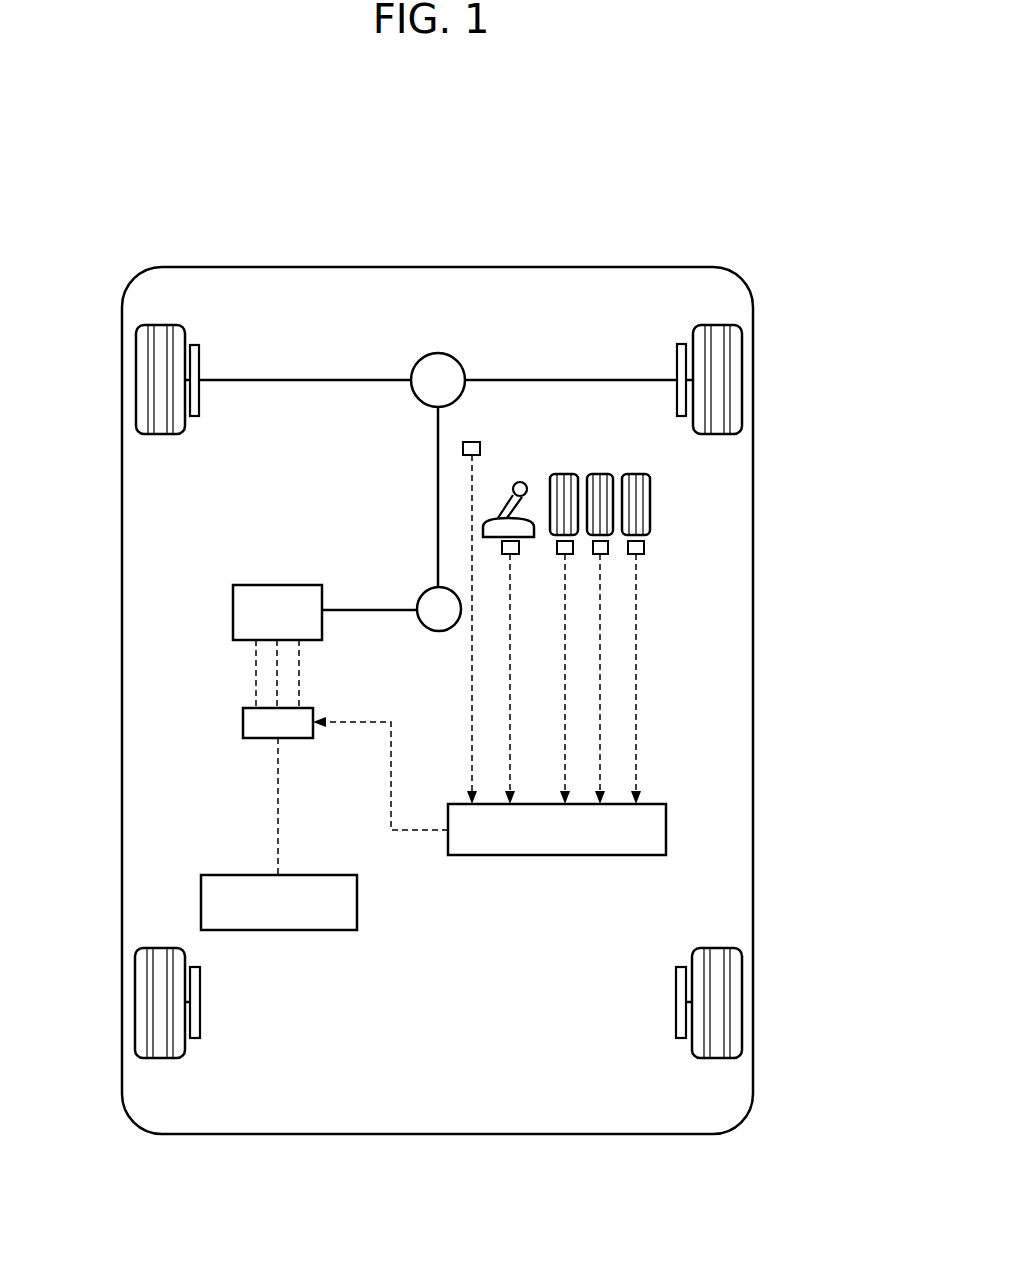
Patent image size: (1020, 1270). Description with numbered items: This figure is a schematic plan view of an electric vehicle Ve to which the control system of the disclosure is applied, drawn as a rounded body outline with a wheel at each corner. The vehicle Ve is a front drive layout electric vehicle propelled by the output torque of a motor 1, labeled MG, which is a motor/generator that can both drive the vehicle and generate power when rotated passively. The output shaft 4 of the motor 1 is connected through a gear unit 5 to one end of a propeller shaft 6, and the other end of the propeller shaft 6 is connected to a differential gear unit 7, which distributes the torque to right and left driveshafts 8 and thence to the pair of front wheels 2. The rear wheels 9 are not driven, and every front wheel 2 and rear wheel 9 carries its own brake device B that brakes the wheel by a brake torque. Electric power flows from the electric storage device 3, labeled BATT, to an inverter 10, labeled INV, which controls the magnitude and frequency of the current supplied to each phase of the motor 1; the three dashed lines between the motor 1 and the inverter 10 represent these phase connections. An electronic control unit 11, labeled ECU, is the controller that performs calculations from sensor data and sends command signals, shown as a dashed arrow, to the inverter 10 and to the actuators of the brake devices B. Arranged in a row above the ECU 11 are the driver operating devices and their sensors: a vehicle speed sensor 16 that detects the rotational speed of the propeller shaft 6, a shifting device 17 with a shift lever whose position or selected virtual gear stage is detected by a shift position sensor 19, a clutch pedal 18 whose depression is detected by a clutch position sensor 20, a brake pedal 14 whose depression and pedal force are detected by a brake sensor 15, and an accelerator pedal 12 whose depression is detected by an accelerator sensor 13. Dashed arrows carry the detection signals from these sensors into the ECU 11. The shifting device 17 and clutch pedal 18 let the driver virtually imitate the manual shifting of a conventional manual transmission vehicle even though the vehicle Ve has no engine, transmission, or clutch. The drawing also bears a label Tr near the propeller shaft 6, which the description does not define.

The motor 1 is at (279, 585).
The front wheels 2 is at (161, 325).
The electric storage device 3 is at (357, 902).
The output shaft 4 is at (373, 609).
The gear unit 5 is at (440, 631).
The propeller shaft 6 is at (438, 498).
The differential gear unit 7 is at (438, 353).
The driveshafts 8 is at (322, 380).
The rear wheels 9 is at (135, 1003).
The inverter 10 is at (243, 724).
The electronic control unit 11 is at (553, 856).
The accelerator pedal 12 is at (636, 474).
The accelerator sensor 13 is at (644, 547).
The brake pedal 14 is at (600, 474).
The brake sensor 15 is at (602, 556).
The vehicle speed sensor 16 is at (471, 442).
The shifting device 17 is at (513, 470).
The clutch pedal 18 is at (563, 474).
The shift position sensor 19 is at (512, 556).
The clutch position sensor 20 is at (568, 556).
The brake device B is at (195, 345).
The vehicle Ve is at (557, 238).
The transmission Tr is at (362, 516).